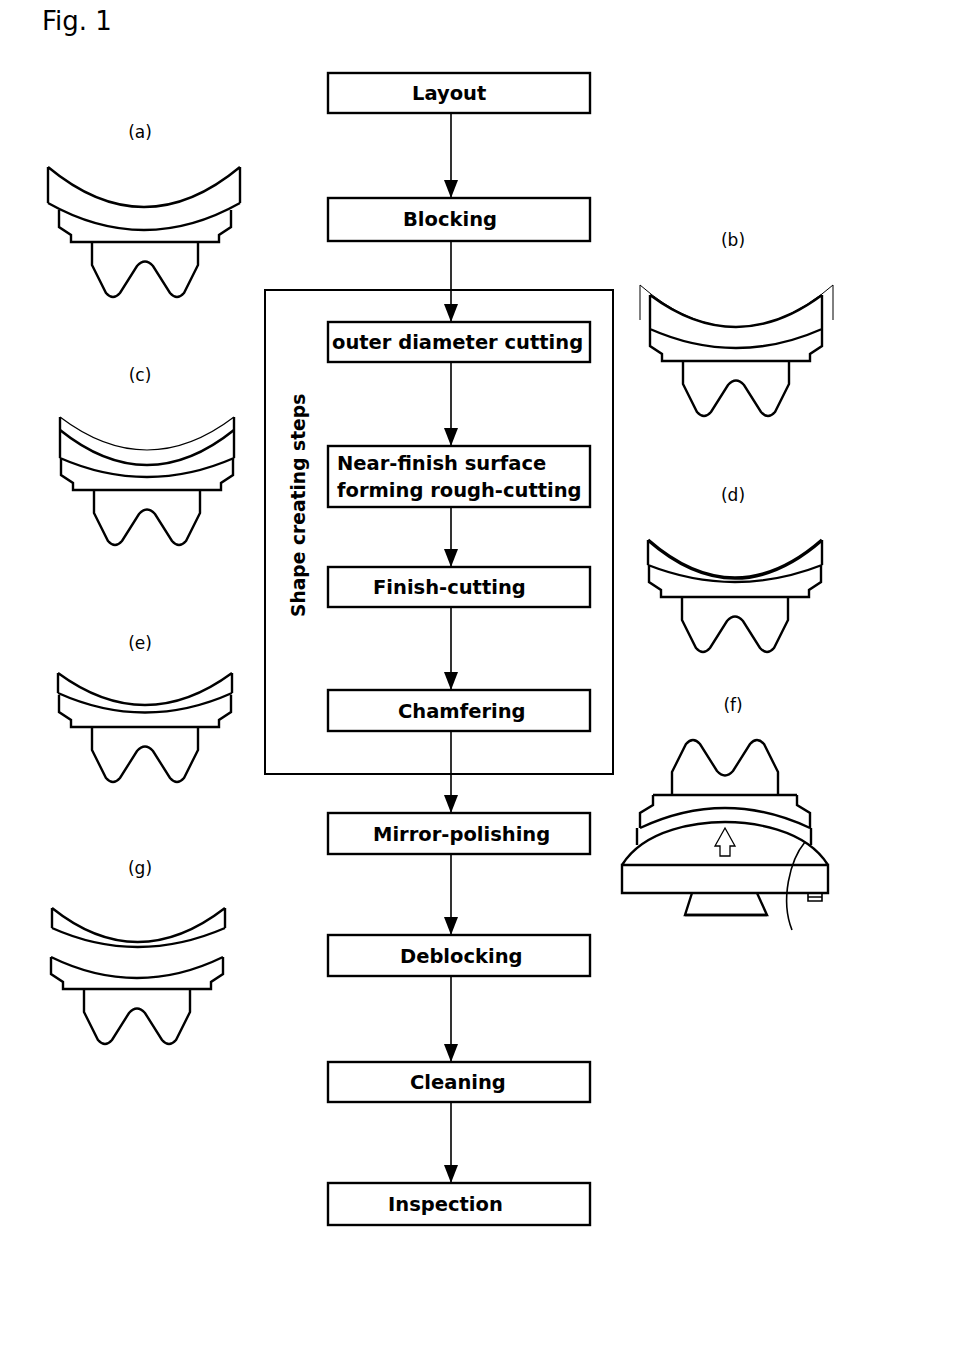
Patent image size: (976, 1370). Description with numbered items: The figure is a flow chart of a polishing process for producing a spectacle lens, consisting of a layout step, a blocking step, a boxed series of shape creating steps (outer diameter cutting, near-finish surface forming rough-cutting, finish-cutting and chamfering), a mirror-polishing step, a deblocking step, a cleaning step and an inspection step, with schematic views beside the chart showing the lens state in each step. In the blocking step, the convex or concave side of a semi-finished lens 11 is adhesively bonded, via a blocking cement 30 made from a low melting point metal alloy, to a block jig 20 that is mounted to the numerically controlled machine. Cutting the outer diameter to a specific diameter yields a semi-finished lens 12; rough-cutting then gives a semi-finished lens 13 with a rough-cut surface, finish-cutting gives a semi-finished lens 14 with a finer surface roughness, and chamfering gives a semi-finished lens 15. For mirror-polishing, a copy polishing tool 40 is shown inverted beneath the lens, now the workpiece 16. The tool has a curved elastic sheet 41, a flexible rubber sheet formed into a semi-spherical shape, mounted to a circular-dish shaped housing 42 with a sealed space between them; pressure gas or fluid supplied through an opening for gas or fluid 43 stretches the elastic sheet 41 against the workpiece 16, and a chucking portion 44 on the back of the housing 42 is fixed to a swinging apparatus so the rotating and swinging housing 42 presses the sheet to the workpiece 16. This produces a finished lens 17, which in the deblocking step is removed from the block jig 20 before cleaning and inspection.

The semi-finished lens 11 is at (240, 188).
The semi-finished lens 12 is at (703, 320).
The semi-finished lens 13 is at (113, 460).
The semi-finished lens 14 is at (715, 577).
The semi-finished lens 15 is at (167, 700).
The workpiece 16 is at (633, 833).
The finished lens 17 is at (225, 913).
The block jig 20 is at (190, 283).
The blocking cement 30 is at (228, 228).
The copy polishing tool 40 is at (678, 900).
The elastic sheet 41 is at (792, 930).
The housing 42 is at (772, 895).
The opening for gas or fluid 43 is at (810, 905).
The chucking portion 44 is at (708, 917).